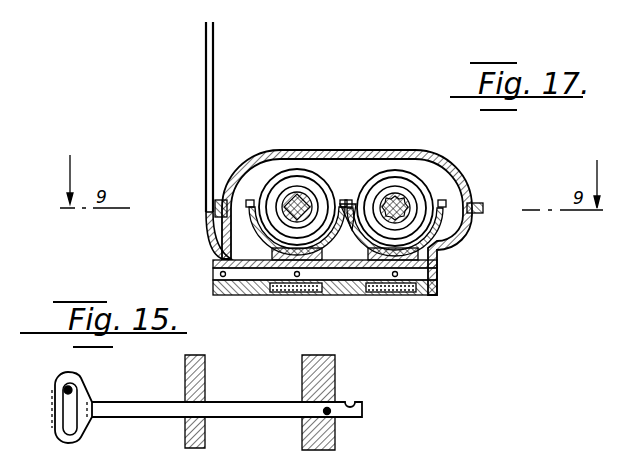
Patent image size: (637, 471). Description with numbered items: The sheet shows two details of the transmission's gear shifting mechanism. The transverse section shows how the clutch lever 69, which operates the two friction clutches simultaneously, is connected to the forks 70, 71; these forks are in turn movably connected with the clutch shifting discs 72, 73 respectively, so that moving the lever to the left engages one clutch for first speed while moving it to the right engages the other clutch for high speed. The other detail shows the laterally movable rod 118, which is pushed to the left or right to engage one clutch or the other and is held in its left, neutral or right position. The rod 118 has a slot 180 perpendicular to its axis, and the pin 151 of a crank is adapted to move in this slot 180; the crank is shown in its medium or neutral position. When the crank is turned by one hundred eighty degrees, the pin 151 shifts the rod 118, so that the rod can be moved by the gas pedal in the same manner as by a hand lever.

In FIG. 17, the clutch lever 69 is at (214, 122).
In FIG. 17, the fork 70 is at (287, 266).
In FIG. 17, the fork 71 is at (382, 266).
In FIG. 17, the clutch shifting disc 72 is at (293, 172).
In FIG. 17, the clutch shifting disc 73 is at (392, 173).
In FIG. 15, the laterally movable rod 118 is at (282, 409).
In FIG. 15, the pin 151 is at (78, 385).
In FIG. 15, the slot 180 is at (67, 407).